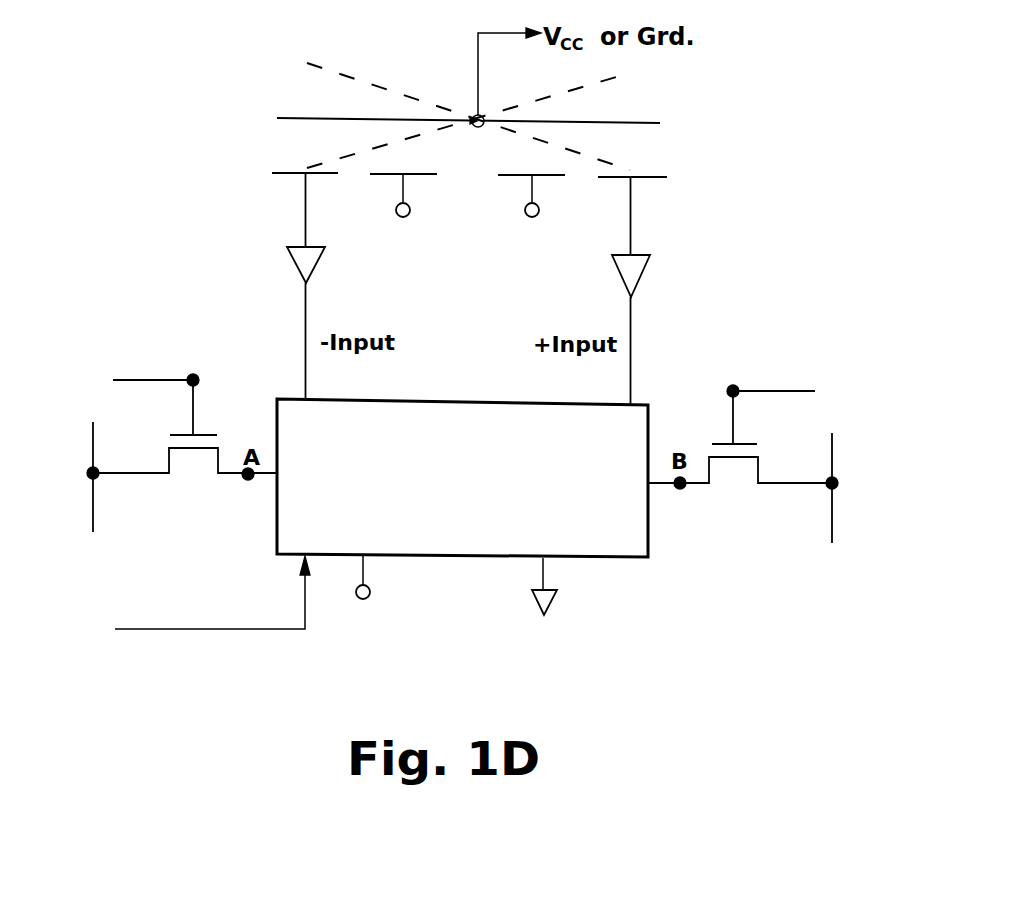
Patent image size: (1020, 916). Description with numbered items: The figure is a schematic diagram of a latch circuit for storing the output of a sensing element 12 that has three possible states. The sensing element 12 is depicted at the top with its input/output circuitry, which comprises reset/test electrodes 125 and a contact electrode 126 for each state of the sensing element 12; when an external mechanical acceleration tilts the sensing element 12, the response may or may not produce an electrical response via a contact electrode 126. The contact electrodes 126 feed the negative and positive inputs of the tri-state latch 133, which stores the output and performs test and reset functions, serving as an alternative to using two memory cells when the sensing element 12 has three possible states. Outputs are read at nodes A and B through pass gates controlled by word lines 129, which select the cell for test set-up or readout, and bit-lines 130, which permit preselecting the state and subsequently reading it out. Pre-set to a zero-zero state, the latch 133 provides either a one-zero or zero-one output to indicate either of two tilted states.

The sensing element 12 is at (652, 114).
The reset/test electrode 125 is at (513, 175).
The contact electrode 126 is at (290, 173).
The word line 129 is at (160, 380).
The bit-line 130 is at (90, 507).
The tri-state latch 133 is at (615, 558).